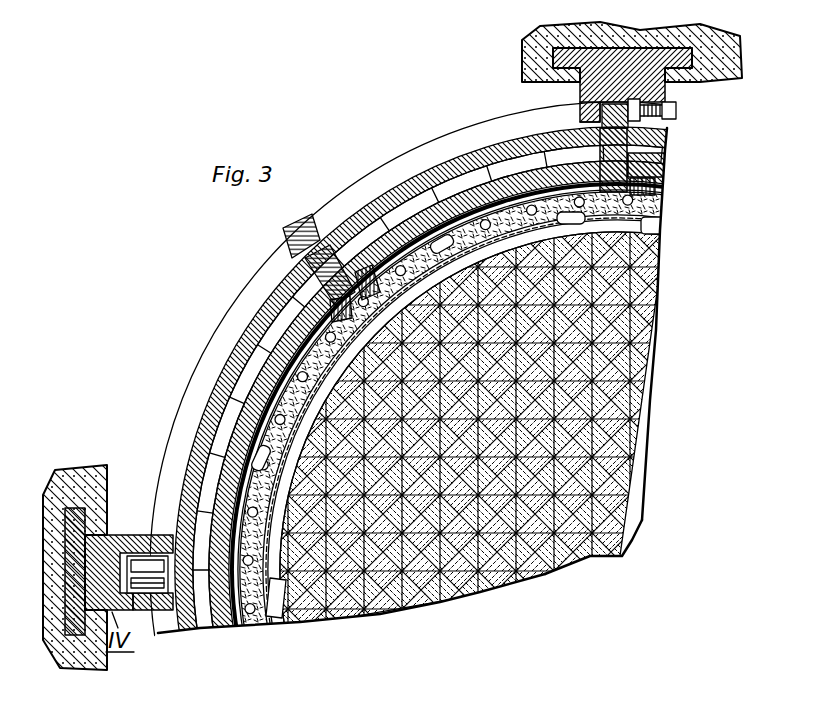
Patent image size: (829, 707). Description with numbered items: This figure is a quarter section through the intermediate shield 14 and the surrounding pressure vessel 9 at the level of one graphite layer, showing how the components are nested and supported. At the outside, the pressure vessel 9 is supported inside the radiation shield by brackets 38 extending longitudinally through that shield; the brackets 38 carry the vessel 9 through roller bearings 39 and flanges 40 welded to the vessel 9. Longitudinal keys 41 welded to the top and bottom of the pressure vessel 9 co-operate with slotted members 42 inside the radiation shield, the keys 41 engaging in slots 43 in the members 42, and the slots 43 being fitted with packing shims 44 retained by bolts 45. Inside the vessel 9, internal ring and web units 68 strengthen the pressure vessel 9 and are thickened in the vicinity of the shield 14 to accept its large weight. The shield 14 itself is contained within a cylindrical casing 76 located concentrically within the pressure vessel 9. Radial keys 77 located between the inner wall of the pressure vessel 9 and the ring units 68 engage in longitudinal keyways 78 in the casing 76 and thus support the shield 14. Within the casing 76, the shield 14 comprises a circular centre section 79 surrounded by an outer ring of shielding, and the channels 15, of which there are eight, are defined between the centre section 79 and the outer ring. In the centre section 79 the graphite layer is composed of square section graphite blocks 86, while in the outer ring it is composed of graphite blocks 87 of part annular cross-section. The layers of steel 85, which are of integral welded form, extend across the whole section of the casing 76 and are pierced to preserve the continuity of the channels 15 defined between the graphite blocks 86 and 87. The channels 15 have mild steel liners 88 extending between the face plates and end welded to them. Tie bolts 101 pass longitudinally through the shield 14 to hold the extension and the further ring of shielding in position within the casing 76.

The pressure vessel 9 is at (410, 178).
The intermediate shield 14 is at (690, 412).
The channels 15 is at (448, 180).
The brackets 38 is at (148, 612).
The roller bearings 39 is at (147, 556).
The flanges 40 is at (122, 535).
The longitudinal keys 41 is at (667, 126).
The slotted members 42 is at (640, 84).
The slots 43 is at (583, 108).
The packing shims 44 is at (672, 102).
The bolts 45 is at (678, 112).
The ring and web units 68 is at (350, 343).
The cylindrical casing 76 is at (382, 197).
The radial keys 77 is at (328, 226).
The longitudinal keyways 78 is at (278, 298).
The circular centre section 79 is at (656, 330).
The layers of steel 85 is at (636, 483).
The graphite blocks 86 is at (628, 512).
The graphite blocks 87 is at (498, 185).
The mild steel liners 88 is at (553, 230).
The tie bolts 101 is at (513, 200).